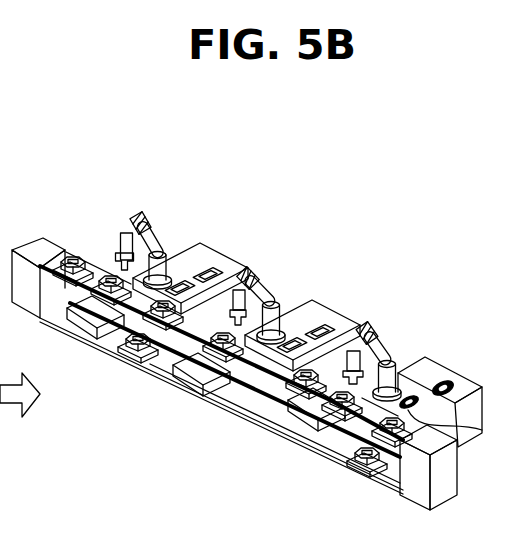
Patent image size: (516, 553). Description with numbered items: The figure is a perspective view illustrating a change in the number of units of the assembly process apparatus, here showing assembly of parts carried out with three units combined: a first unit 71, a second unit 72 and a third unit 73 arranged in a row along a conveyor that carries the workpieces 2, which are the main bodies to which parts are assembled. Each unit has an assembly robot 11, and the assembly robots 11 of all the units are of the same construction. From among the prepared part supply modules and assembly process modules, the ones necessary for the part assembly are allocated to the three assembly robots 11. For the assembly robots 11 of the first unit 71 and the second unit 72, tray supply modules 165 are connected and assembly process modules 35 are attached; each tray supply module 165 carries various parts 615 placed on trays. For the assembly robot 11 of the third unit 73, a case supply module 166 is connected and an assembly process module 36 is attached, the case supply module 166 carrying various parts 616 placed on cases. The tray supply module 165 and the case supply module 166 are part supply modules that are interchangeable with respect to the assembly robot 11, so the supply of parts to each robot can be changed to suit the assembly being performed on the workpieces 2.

The workpiece 2 is at (122, 327).
The assembly robot 11 is at (134, 222).
The assembly process module 35 is at (118, 283).
The assembly process module 36 is at (298, 414).
The first unit 71 is at (151, 175).
The second unit 72 is at (339, 206).
The third unit 73 is at (447, 262).
The tray supply module 165 is at (219, 250).
The case supply module 166 is at (465, 380).
The parts 615 is at (225, 258).
The parts 616 is at (446, 380).